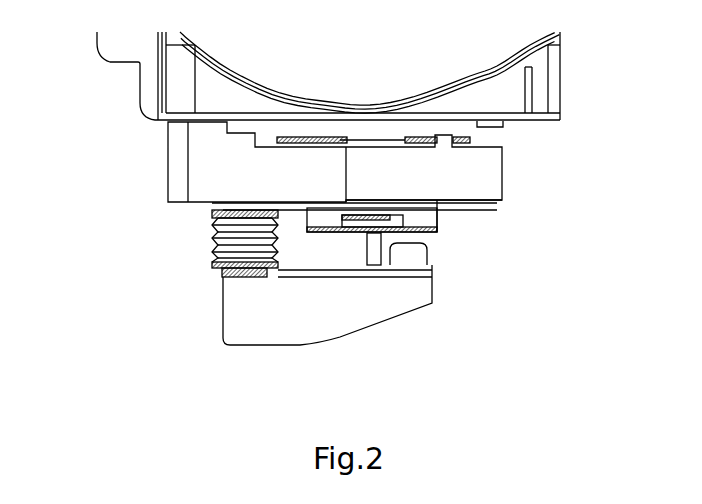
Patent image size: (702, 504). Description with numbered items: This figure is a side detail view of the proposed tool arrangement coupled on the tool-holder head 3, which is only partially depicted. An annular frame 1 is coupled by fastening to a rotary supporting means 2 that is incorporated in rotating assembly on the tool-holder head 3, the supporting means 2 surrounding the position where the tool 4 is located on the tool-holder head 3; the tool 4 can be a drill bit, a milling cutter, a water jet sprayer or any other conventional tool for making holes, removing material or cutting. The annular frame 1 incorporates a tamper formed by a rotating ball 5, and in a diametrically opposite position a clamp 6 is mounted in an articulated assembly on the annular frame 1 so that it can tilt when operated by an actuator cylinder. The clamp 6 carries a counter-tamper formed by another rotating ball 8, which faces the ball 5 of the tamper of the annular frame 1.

The annular frame 1 is at (440, 228).
The rotary supporting means 2 is at (420, 218).
The tool-holder head 3 is at (518, 82).
The tool 4 is at (373, 248).
The rotating ball 5 is at (407, 232).
The clamp 6 is at (255, 312).
The rotating ball 8 is at (417, 235).